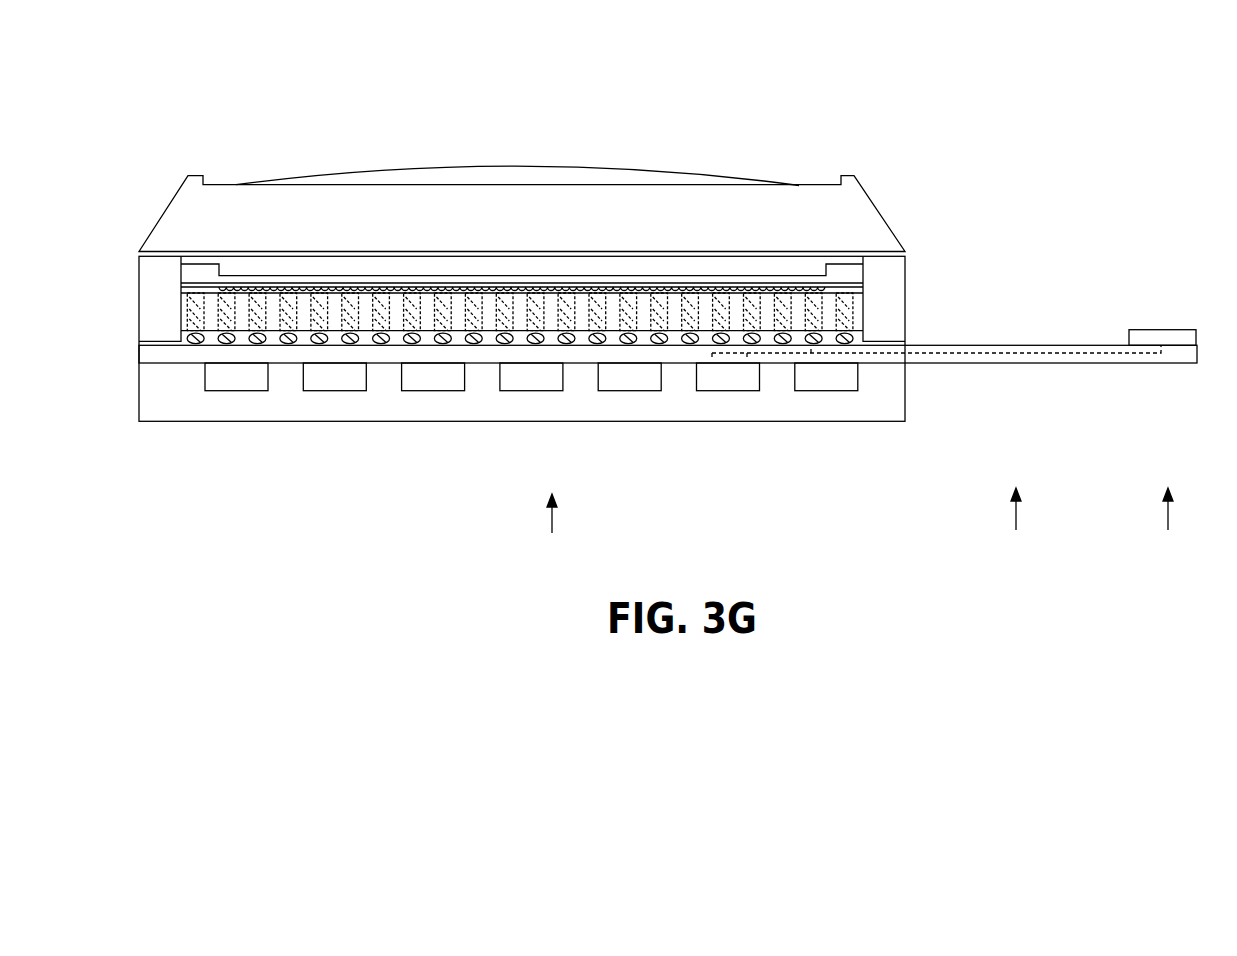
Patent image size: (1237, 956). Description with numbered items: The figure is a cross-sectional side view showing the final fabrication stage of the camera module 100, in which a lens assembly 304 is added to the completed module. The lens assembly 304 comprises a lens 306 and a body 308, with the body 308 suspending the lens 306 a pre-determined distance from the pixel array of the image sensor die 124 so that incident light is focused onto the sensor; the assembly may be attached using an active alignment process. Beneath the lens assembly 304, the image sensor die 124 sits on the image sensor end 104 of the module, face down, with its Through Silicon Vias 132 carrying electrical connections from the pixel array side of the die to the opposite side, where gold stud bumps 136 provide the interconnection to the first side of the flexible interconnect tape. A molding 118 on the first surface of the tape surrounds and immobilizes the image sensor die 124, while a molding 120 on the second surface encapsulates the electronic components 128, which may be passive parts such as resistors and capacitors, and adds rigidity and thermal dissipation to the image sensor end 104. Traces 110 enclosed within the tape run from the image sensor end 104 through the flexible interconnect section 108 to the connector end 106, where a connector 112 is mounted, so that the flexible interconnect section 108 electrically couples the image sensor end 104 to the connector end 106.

The camera module 100 is at (920, 57).
The lens assembly 304 is at (344, 130).
The lens 306 is at (623, 169).
The body 308 is at (861, 219).
The Through Silicon Vias 132 is at (838, 292).
The image sensor die 124 is at (580, 301).
The gold stud bumps 136 is at (835, 329).
The molding 118 is at (888, 329).
The traces 110 is at (1063, 344).
The connector 112 is at (1153, 322).
The electronic components 128 is at (840, 368).
The molding 120 is at (843, 390).
The image sensor end 104 is at (554, 530).
The flexible interconnect section 108 is at (1019, 524).
The connector end 106 is at (1171, 524).